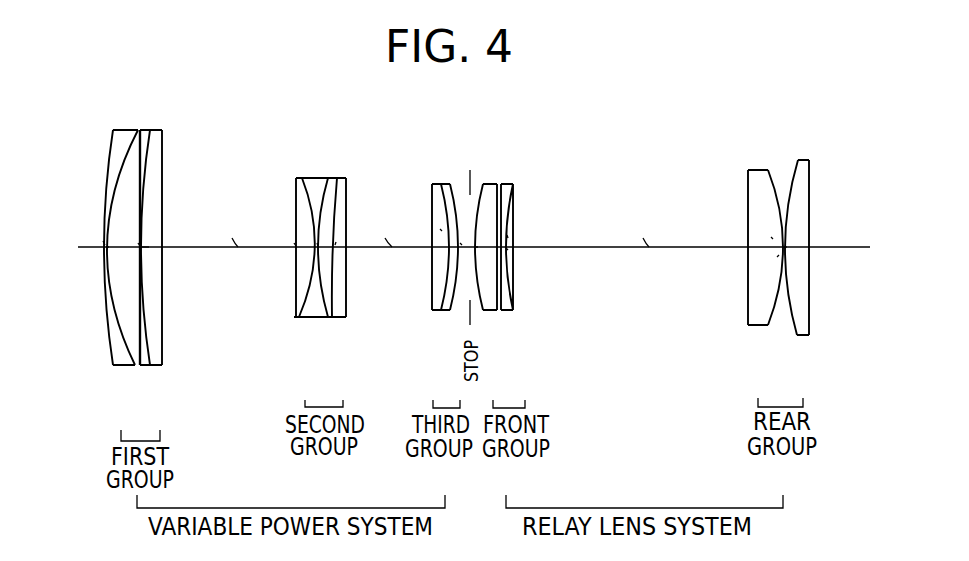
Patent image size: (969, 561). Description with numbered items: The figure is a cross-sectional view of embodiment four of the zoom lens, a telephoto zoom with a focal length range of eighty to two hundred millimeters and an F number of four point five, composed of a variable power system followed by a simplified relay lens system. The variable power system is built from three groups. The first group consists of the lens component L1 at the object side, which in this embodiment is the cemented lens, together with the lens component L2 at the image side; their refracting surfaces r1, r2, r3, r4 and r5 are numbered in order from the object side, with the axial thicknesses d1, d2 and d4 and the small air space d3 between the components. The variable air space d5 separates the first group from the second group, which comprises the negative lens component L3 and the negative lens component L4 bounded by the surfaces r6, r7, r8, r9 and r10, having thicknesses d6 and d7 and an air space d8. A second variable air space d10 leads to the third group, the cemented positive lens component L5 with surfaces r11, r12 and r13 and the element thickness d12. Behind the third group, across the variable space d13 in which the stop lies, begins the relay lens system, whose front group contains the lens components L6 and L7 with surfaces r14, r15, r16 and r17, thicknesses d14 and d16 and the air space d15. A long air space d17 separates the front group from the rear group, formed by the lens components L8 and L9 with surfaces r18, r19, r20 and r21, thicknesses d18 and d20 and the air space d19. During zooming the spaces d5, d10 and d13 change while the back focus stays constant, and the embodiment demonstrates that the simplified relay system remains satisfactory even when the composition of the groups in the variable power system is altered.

The positive lens component L1 is at (113, 250).
The positive lens component L2 is at (160, 250).
The negative lens component L3 is at (288, 256).
The negative lens component L4 is at (341, 256).
The cemented positive lens component L5 is at (434, 258).
The lens component L6 is at (491, 258).
The lens component L7 is at (530, 258).
The lens component L8 is at (755, 253).
The lens component L9 is at (803, 253).
The refracting surface r1 is at (113, 130).
The refracting surface r2 is at (133, 130).
The refracting surface r3 is at (141, 130).
The refracting surface r4 is at (150, 130).
The refracting surface r5 is at (163, 130).
The refracting surface r6 is at (296, 178).
The refracting surface r7 is at (302, 178).
The refracting surface r8 is at (328, 178).
The refracting surface r9 is at (337, 178).
The refracting surface r10 is at (347, 178).
The refracting surface r11 is at (432, 184).
The refracting surface r12 is at (441, 184).
The refracting surface r13 is at (450, 184).
The refracting surface r14 is at (483, 184).
The refracting surface r15 is at (497, 184).
The refracting surface r16 is at (501, 184).
The refracting surface r17 is at (513, 184).
The refracting surface r18 is at (748, 170).
The refracting surface r19 is at (768, 170).
The refracting surface r20 is at (798, 160).
The refracting surface r21 is at (809, 160).
The axial thickness d1 is at (104, 242).
The axial thickness d2 is at (119, 239).
The air space d3 is at (139, 244).
The axial thickness d4 is at (153, 239).
The variable air space d5 is at (221, 237).
The axial thickness d6 is at (295, 244).
The axial thickness d7 is at (318, 244).
The air space d8 is at (336, 244).
The variable air space d10 is at (378, 237).
The axial thickness d12 is at (441, 230).
The variable air space d13 is at (461, 244).
The axial thickness d14 is at (493, 239).
The air space d15 is at (507, 236).
The axial thickness d16 is at (507, 249).
The air space d17 is at (630, 237).
The axial thickness d18 is at (772, 238).
The air space d19 is at (778, 256).
The axial thickness d20 is at (802, 239).